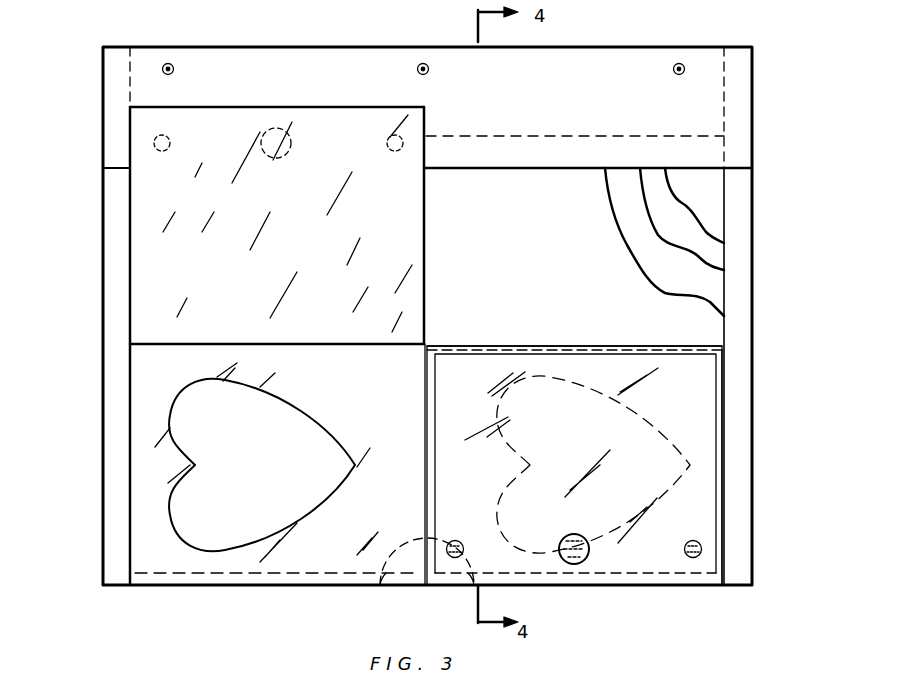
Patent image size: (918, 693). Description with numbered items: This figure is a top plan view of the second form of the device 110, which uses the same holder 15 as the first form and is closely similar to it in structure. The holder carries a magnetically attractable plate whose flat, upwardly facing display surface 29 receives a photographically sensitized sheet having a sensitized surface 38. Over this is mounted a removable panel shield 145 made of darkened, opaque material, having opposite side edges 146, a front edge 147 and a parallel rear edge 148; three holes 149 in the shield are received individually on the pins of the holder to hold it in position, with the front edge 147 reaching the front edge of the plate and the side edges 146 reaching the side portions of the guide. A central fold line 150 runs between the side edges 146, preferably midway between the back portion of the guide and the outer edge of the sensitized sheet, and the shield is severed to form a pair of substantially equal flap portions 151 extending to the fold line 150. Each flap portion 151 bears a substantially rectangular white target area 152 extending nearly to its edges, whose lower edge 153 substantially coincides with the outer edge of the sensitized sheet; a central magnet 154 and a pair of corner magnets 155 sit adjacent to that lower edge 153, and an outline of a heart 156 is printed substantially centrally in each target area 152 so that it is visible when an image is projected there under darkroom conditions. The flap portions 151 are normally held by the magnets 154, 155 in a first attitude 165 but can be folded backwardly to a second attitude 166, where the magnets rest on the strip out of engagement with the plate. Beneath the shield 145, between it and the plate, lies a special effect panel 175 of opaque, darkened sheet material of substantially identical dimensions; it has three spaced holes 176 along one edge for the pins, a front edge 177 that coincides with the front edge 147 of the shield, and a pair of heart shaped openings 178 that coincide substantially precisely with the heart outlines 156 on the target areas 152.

The holder 15 is at (752, 225).
The display surface 29 is at (712, 204).
The photographically sensitized surface 38 is at (686, 236).
The device 110 is at (763, 197).
The removable panel shield 145 is at (565, 286).
The side edges 146 is at (130, 206).
The front edge 147 is at (585, 586).
The rear edge 148 is at (216, 44).
The holes 149 is at (174, 69).
The central fold line 150 is at (540, 345).
The flap portions 151 is at (278, 287).
The target area 152 is at (706, 578).
The lower edge 153 is at (645, 583).
The central magnet 154 is at (291, 150).
The corner magnets 155 is at (170, 146).
The outline of a heart 156 is at (628, 398).
The first attitude or position 165 is at (708, 490).
The second attitude or position 166 is at (428, 275).
The special effect panel 175 is at (690, 279).
The holes 176 is at (172, 74).
The front edge 177 is at (287, 587).
The heart shaped openings 178 is at (318, 502).